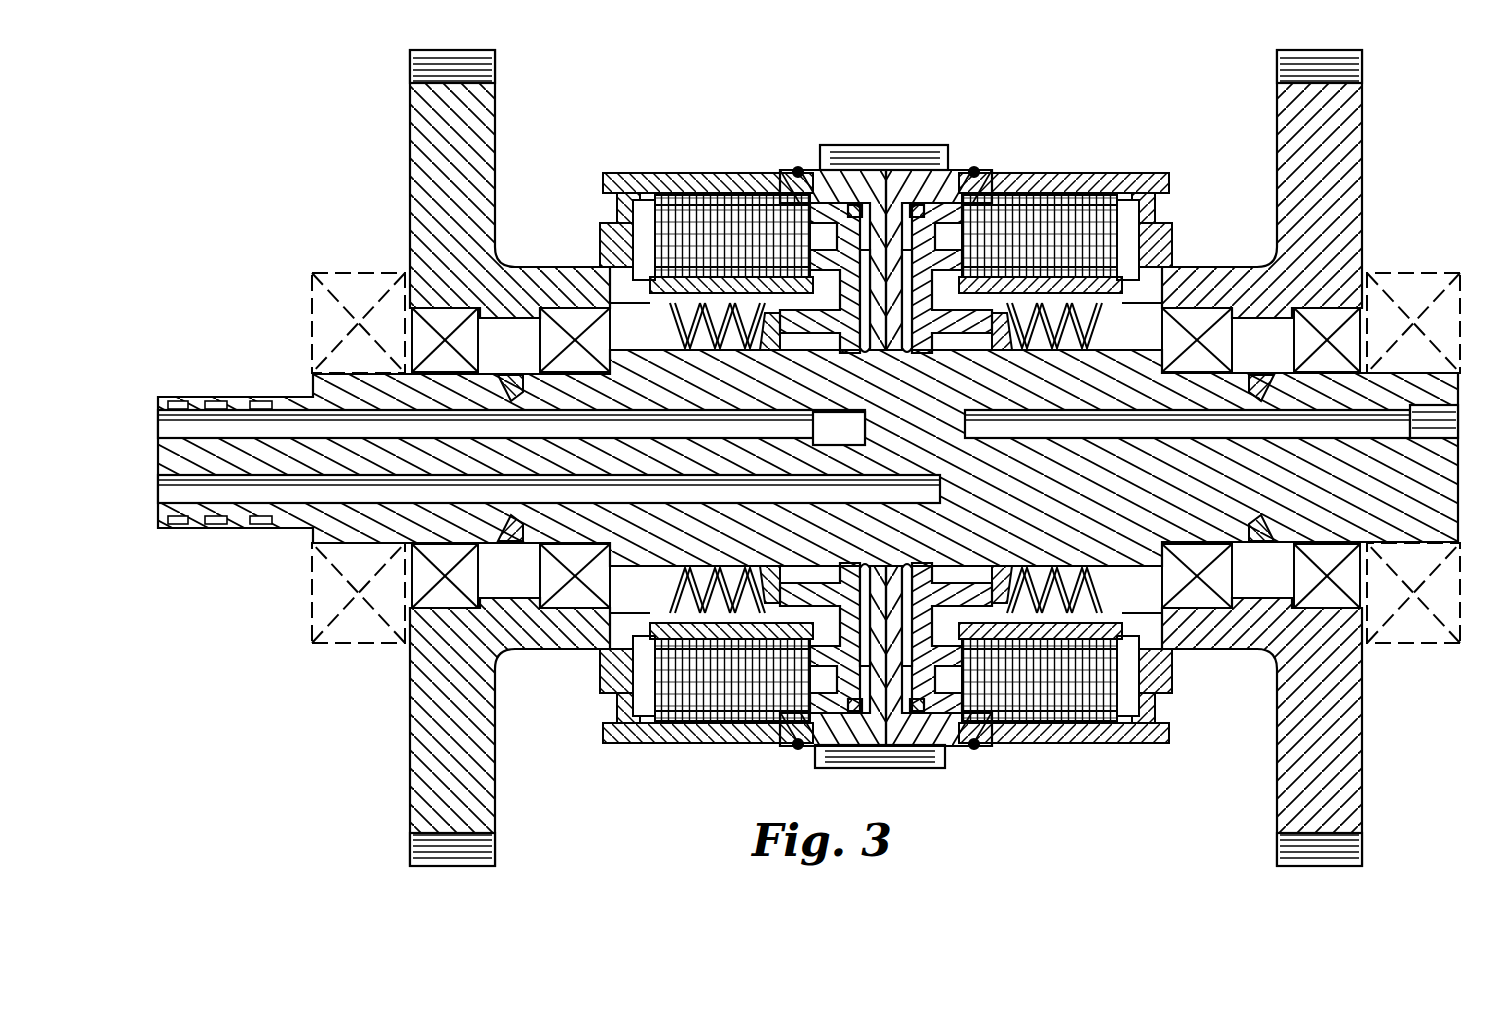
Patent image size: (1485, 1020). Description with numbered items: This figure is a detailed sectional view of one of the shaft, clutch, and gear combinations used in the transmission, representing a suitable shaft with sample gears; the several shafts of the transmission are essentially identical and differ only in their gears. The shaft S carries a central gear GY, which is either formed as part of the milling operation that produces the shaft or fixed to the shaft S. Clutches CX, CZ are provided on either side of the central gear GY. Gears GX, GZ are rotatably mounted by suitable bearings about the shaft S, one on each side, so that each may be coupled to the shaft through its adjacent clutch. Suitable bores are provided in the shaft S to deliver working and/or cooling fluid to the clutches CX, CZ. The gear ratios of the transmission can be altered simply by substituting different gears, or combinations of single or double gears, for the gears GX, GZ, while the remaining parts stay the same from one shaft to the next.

The shaft S is at (160, 437).
The gear GX is at (408, 793).
The central gear GY is at (852, 145).
The gear GZ is at (1362, 793).
The clutch CX is at (716, 175).
The clutch CZ is at (1050, 175).